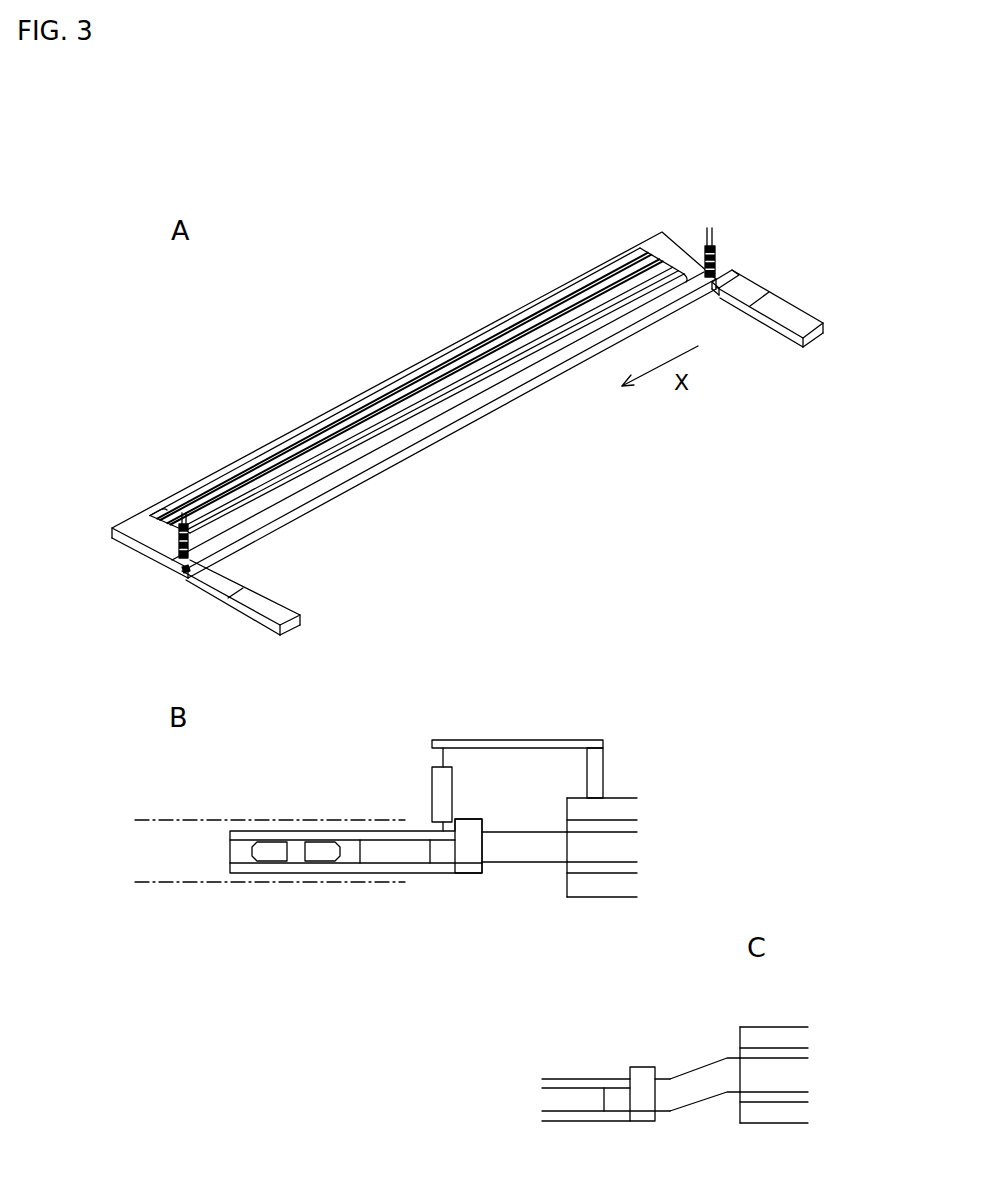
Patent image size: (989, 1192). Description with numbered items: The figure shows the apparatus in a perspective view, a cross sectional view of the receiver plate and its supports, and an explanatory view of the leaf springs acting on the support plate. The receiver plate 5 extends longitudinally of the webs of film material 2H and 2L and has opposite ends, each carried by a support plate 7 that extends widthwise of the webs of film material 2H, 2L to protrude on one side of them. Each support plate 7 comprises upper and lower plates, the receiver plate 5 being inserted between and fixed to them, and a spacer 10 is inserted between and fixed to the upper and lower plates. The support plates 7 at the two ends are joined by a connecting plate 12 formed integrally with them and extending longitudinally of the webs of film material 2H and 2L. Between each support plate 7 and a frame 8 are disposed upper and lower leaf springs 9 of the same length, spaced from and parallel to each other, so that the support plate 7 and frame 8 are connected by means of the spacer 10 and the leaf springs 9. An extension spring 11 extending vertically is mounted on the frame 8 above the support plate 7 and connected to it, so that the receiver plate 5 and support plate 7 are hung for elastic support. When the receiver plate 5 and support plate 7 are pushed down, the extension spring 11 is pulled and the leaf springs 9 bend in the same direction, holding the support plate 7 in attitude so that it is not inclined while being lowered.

The receiver plate 5 is at (257, 447).
The support plate 7 is at (135, 522).
The frame 8 is at (255, 605).
The leaf spring 9 is at (197, 577).
The spacer 10 is at (445, 853).
The extension spring 11 is at (192, 537).
The connecting plate 12 is at (360, 466).
The web of film material 2H is at (183, 818).
The web of film material 2L is at (208, 883).